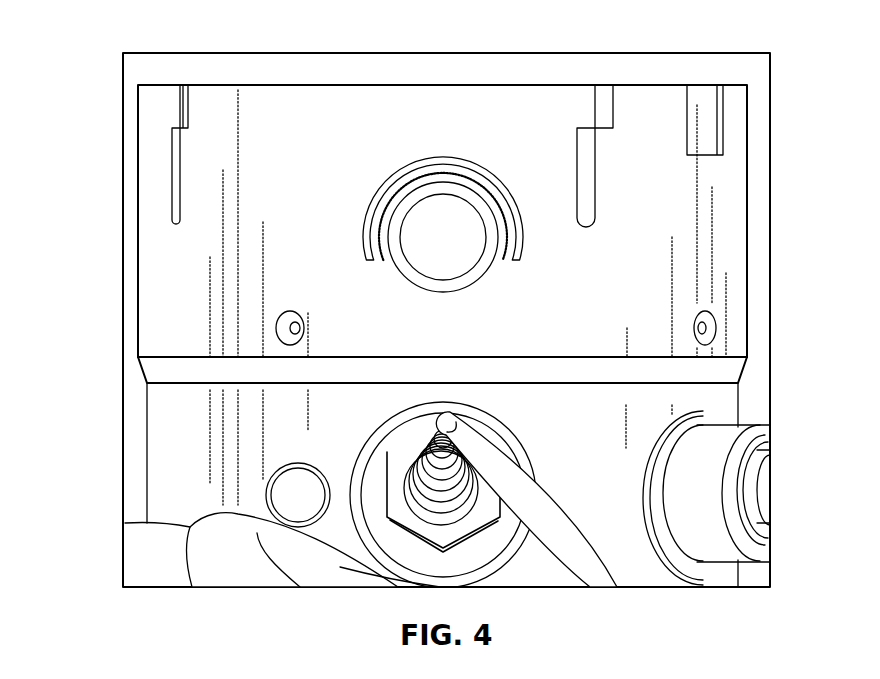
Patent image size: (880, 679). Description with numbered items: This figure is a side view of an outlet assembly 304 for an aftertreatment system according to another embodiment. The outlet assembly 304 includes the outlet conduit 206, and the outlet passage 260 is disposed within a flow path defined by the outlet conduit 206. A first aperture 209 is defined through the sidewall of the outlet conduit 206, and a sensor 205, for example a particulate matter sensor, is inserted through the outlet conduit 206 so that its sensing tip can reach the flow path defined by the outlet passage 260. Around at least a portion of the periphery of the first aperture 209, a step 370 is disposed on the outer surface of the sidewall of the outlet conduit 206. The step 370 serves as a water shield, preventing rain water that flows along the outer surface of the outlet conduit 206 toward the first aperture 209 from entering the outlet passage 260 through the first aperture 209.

The outlet assembly 304 is at (138, 240).
The outlet conduit 206 is at (158, 349).
The sensor 205 is at (415, 436).
The outlet passage 260 is at (443, 237).
The first aperture 209 is at (485, 280).
The step 370 is at (444, 157).